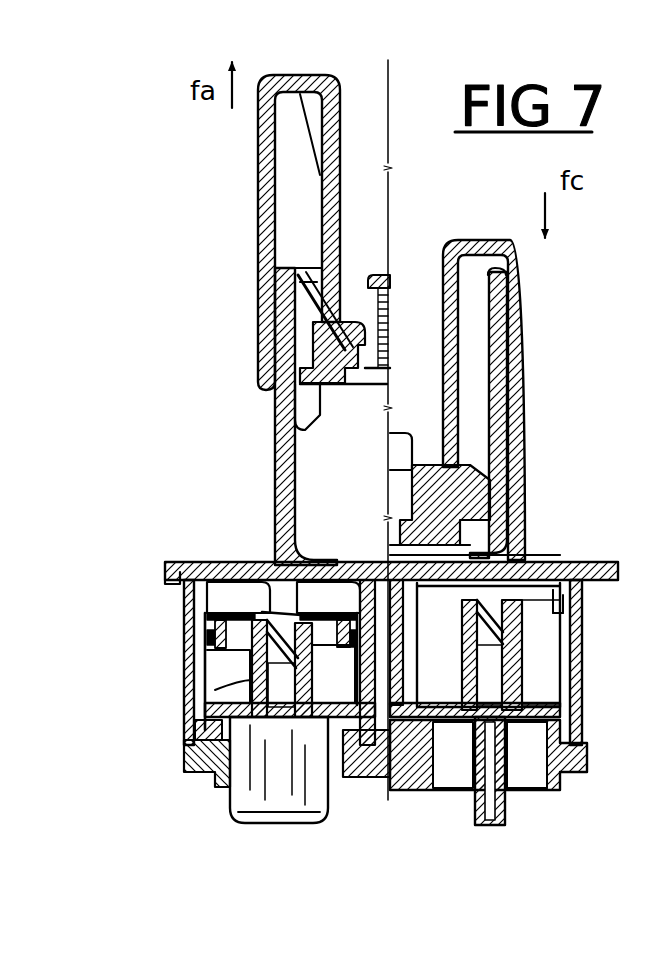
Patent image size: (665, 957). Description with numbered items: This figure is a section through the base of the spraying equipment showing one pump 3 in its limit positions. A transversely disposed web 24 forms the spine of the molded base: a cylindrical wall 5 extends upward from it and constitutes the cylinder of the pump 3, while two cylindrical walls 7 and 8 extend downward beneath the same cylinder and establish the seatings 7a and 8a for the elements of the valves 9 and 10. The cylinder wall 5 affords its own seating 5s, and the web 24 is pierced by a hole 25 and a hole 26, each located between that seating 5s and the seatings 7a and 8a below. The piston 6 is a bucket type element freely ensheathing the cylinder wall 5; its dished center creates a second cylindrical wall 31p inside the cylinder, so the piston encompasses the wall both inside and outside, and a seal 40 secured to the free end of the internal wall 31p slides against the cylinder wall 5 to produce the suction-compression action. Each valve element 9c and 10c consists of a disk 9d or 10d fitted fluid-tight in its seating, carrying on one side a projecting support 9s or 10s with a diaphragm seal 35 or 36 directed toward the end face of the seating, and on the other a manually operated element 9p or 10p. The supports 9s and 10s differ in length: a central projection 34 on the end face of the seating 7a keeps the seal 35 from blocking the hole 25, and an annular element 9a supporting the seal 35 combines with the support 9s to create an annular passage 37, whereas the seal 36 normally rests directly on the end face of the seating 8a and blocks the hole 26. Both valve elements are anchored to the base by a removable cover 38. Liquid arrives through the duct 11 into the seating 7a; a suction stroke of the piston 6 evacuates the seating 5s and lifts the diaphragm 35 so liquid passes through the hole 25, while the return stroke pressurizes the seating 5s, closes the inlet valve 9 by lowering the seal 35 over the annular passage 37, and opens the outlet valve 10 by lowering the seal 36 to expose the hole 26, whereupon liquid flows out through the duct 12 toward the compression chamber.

The second cylindrical wall 31p is at (342, 98).
The cylindrical wall 5 is at (272, 283).
The seating 5s is at (262, 337).
The seal 40 is at (272, 257).
The hole 25 is at (277, 440).
The web 24 is at (262, 540).
The central projection 34 is at (272, 560).
The diaphragm seal 35 is at (257, 620).
The annular passage 37 is at (207, 637).
The annular element 9a is at (233, 632).
The cylindrical wall 7 is at (195, 653).
The seating 7a is at (203, 668).
The projecting support 9s is at (245, 690).
The disk 9d is at (207, 722).
The valve 9 is at (170, 768).
The valve element 9c is at (222, 811).
The manually operated element 9p is at (248, 820).
The duct 11 is at (280, 733).
The cover 38 is at (348, 745).
The manually operated element 10p is at (468, 800).
The disk 10d is at (535, 797).
The valve element 10c is at (562, 783).
The valve 10 is at (566, 785).
The cylindrical wall 8 is at (573, 686).
The duct 12 is at (520, 677).
The projecting support 10s is at (520, 637).
The seating 8a is at (588, 563).
The diaphragm seal 36 is at (547, 562).
The hole 26 is at (508, 497).
The pump 3 is at (534, 376).
The piston 6 is at (463, 236).